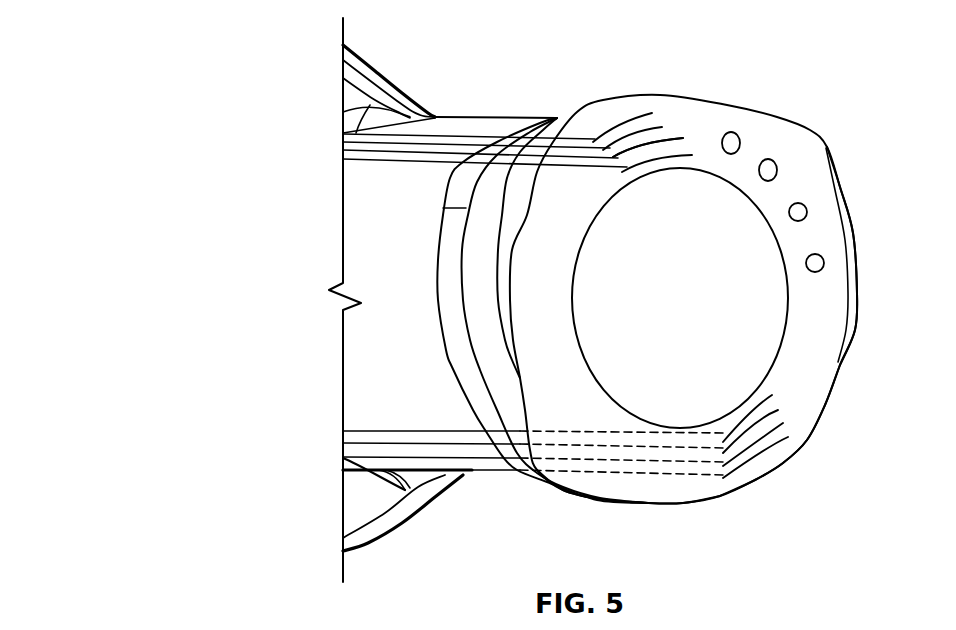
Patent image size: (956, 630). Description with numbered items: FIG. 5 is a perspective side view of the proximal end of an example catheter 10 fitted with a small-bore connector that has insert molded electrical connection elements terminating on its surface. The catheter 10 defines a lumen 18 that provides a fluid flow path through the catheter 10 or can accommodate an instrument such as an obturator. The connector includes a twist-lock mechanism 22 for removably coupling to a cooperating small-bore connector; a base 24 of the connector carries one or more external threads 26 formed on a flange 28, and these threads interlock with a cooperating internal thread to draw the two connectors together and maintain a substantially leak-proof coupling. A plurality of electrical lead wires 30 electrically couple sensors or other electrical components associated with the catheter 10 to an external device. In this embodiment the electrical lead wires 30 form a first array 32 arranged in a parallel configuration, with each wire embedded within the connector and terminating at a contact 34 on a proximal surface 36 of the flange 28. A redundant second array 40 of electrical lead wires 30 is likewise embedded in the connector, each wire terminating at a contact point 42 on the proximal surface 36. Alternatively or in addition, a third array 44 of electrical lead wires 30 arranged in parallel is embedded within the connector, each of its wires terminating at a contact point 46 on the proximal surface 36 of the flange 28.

The catheter 10 is at (866, 90).
The lumen 18 is at (731, 330).
The twist-lock mechanism 22 is at (746, 80).
The base 24 is at (437, 117).
The external threads 26 is at (456, 323).
The flange 28 is at (678, 497).
The electrical lead wires 30 is at (342, 128).
The first array 32 is at (754, 486).
The contact 34 is at (794, 468).
The proximal surface 36 is at (818, 313).
The second array 40 is at (627, 97).
The contact point 42 is at (679, 115).
The third array 44 is at (795, 146).
The contact point 46 is at (808, 209).